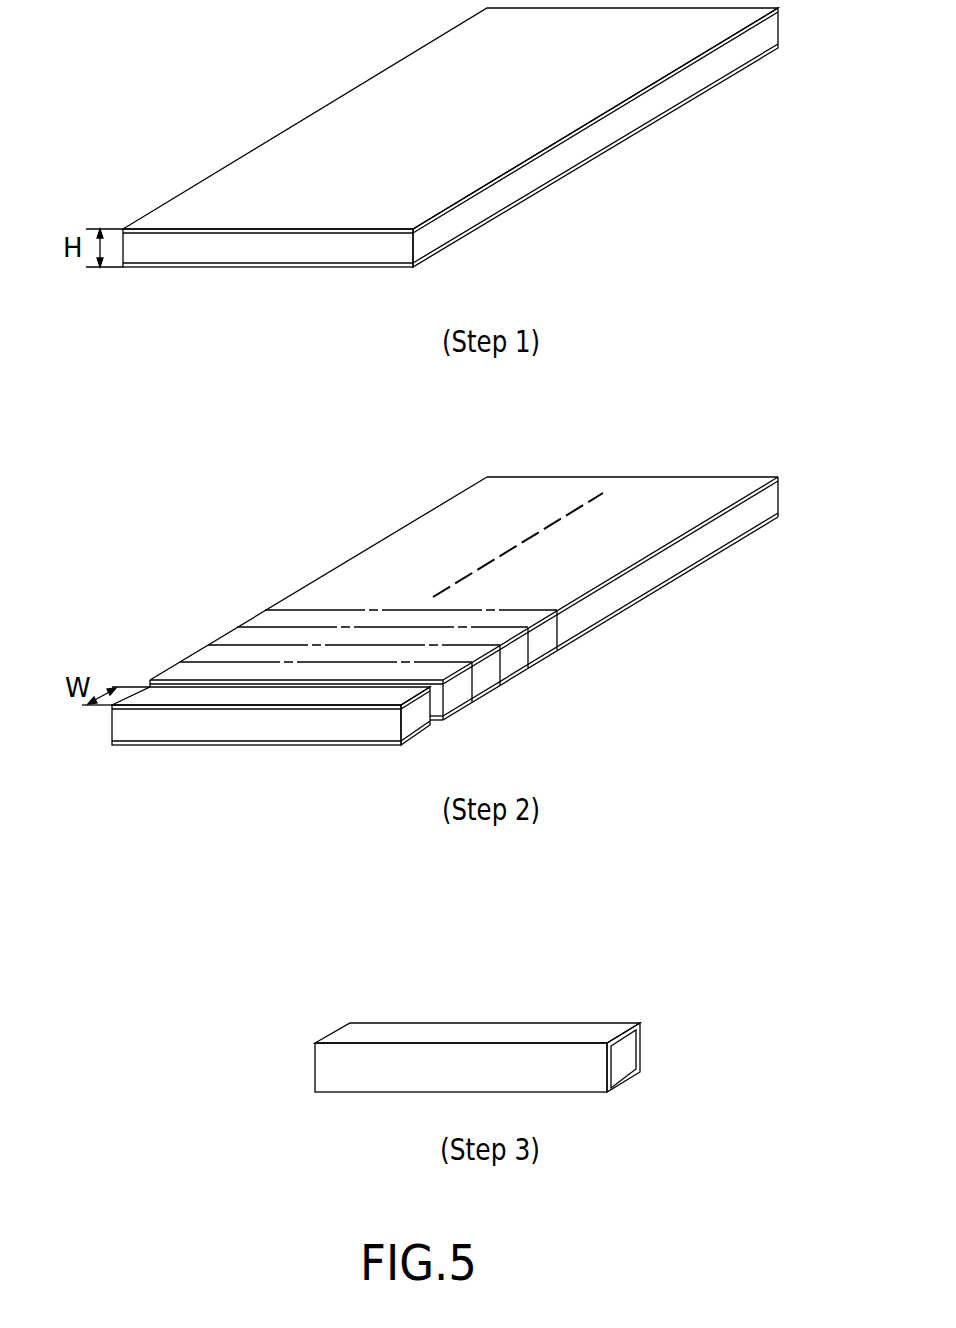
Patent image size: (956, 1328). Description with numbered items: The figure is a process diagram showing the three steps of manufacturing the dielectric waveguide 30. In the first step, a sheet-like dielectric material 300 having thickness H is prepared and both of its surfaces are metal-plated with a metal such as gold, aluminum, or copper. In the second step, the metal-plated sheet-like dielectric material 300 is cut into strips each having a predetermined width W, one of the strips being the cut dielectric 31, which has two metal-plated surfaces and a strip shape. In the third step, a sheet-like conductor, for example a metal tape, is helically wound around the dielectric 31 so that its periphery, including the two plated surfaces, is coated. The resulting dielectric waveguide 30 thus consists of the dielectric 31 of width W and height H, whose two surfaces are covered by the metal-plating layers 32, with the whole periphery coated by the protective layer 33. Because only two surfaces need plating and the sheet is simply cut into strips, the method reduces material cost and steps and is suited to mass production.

The sheet-like dielectric material 300 is at (577, 160).
The dielectric waveguide 30 is at (477, 985).
The dielectric 31 is at (257, 732).
The metal-plating layer 32 is at (420, 697).
The protective layer 33 is at (438, 1030).